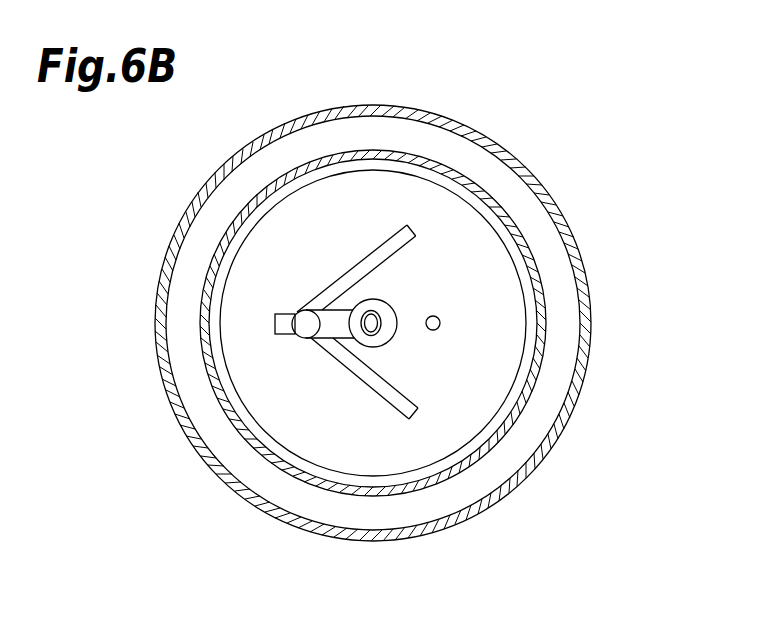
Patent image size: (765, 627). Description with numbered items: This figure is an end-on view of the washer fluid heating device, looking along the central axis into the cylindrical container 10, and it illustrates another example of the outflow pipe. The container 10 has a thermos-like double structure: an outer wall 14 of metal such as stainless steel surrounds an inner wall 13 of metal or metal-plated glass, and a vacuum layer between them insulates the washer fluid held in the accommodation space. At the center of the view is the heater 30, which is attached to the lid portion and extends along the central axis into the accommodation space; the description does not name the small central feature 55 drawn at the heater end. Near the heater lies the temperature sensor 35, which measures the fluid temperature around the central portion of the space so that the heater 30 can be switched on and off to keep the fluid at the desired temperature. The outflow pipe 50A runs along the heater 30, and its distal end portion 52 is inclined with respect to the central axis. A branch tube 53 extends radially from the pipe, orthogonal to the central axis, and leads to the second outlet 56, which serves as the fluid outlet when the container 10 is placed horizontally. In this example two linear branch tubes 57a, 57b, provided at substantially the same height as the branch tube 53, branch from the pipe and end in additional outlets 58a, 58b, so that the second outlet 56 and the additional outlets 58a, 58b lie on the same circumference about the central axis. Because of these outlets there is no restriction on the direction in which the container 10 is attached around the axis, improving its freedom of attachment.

The container 10 is at (400, 313).
The inner wall 13 is at (548, 320).
The outer wall 14 is at (583, 262).
The heater 30 is at (386, 302).
The temperature sensor 35 is at (441, 325).
The outflow pipe 50A is at (369, 328).
The distal end portion 52 is at (339, 309).
The branch tube 53 is at (307, 350).
The shaft bore 55 is at (380, 334).
The second outlet 56 is at (277, 335).
The branch tube 57a is at (387, 242).
The branch tube 57b is at (393, 410).
The additional outlet 58a is at (418, 232).
The additional outlet 58b is at (417, 412).